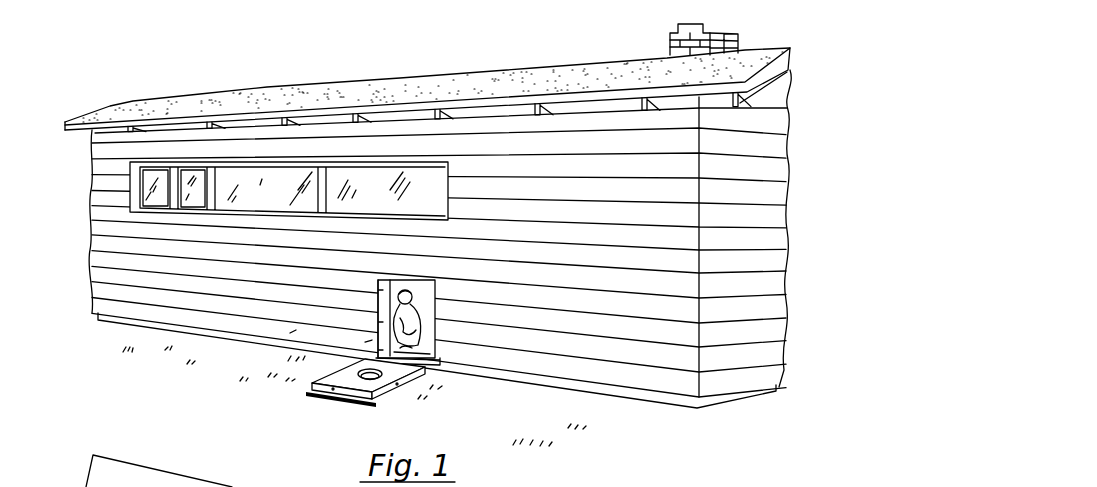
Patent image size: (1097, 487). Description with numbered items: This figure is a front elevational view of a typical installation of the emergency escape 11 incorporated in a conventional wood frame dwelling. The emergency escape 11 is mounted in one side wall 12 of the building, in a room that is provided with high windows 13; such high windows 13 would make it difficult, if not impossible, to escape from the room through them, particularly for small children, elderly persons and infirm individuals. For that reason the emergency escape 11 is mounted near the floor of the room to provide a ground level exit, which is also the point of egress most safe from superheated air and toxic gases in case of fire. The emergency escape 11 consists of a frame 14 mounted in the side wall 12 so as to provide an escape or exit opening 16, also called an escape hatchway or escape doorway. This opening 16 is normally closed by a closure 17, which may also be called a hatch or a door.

The emergency escape 11 is at (428, 216).
The side wall 12 is at (633, 383).
The high windows 13 is at (447, 193).
The frame 14 is at (383, 303).
The exit opening 16 is at (369, 338).
The closure 17 is at (297, 403).